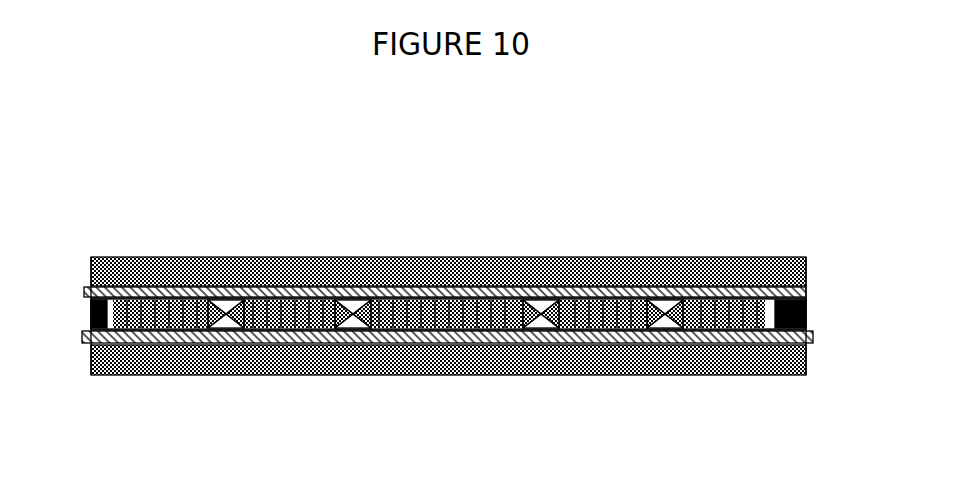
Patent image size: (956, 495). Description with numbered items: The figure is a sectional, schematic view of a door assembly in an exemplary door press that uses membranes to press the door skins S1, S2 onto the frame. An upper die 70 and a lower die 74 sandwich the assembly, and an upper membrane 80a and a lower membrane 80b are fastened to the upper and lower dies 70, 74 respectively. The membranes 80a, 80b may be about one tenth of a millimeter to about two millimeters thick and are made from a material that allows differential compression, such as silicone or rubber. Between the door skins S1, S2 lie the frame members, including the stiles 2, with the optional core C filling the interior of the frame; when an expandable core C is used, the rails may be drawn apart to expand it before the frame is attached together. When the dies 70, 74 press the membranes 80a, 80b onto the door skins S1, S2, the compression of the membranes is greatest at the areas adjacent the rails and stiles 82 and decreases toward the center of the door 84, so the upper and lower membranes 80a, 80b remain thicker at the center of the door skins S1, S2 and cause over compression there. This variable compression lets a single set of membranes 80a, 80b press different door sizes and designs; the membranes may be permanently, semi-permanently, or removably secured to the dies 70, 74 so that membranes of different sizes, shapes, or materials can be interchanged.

The stile 2 is at (808, 303).
The upper die 70 is at (205, 272).
The lower die 74 is at (680, 357).
The upper membrane 80a is at (322, 292).
The lower membrane 80b is at (328, 343).
The areas adjacent the rails and stiles 82 is at (793, 306).
The center of the door 84 is at (445, 332).
The door skin S1 is at (268, 298).
The door skin S2 is at (573, 333).
The core C is at (618, 310).